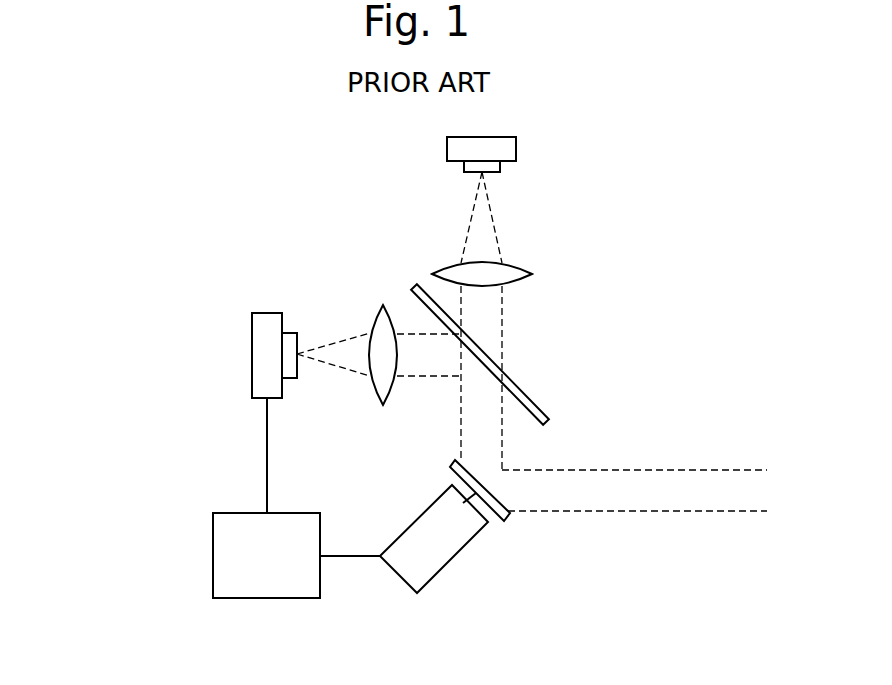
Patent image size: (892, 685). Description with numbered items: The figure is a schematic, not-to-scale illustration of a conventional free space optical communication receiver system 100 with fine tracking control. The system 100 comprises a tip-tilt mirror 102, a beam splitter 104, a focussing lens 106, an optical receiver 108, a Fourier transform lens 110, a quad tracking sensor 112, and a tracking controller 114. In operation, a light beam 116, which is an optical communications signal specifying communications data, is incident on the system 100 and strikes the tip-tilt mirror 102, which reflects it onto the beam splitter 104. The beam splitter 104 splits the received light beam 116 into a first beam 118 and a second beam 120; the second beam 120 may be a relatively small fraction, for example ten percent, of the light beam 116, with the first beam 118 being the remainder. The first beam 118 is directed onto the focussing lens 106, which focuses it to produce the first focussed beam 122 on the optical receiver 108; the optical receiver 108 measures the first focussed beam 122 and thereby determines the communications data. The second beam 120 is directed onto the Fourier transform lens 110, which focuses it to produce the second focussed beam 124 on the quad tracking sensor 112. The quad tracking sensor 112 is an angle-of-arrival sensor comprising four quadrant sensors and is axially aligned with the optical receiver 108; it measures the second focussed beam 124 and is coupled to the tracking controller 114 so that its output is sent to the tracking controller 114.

The free space optical communication receiver system 100 is at (248, 231).
The tip-tilt mirror 102 is at (498, 520).
The beam splitter 104 is at (548, 414).
The focussing lens 106 is at (510, 274).
The optical receiver 108 is at (505, 148).
The Fourier transform lens 110 is at (377, 395).
The quad tracking sensor 112 is at (262, 350).
The tracking controller 114 is at (225, 542).
The light beam 116 is at (655, 470).
The first beam 118 is at (503, 333).
The second beam 120 is at (412, 377).
The first focussed beam 122 is at (491, 209).
The second focussed beam 124 is at (337, 347).